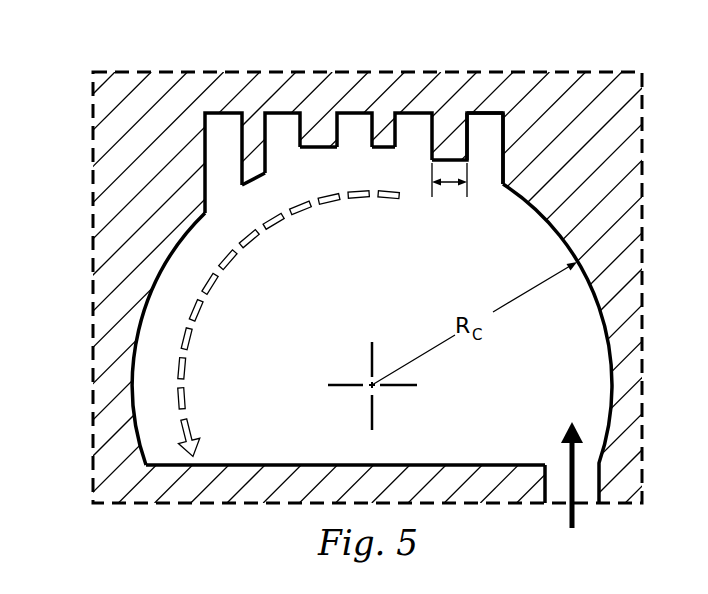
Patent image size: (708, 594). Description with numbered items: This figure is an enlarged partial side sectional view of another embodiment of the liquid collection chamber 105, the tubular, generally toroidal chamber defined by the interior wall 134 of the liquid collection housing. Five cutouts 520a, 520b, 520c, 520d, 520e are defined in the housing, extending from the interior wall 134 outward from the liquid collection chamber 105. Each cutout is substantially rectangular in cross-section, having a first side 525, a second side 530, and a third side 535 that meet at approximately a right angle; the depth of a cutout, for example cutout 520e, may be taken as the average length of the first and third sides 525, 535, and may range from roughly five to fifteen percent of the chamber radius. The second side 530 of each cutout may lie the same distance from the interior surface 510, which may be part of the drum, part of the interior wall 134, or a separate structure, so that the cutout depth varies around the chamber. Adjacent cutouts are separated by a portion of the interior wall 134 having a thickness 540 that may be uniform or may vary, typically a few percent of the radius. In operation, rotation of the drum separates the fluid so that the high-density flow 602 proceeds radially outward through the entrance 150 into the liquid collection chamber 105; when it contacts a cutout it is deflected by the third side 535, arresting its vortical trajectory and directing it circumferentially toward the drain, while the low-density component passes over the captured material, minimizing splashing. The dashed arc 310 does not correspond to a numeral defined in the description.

The liquid collection chamber 105 is at (157, 314).
The interior wall 134 is at (598, 318).
The entrance 150 is at (556, 465).
The fluid flow path 310 is at (193, 332).
The interior surface 510 is at (280, 463).
The cutout 520a is at (222, 123).
The cutout 520b is at (281, 122).
The cutout 520c is at (355, 123).
The cutout 520d is at (412, 123).
The cutout 520e is at (480, 123).
The first side 525 is at (503, 160).
The second side 530 is at (495, 117).
The third side 535 is at (468, 150).
The thickness 540 is at (450, 192).
The high-density flow 602 is at (575, 517).